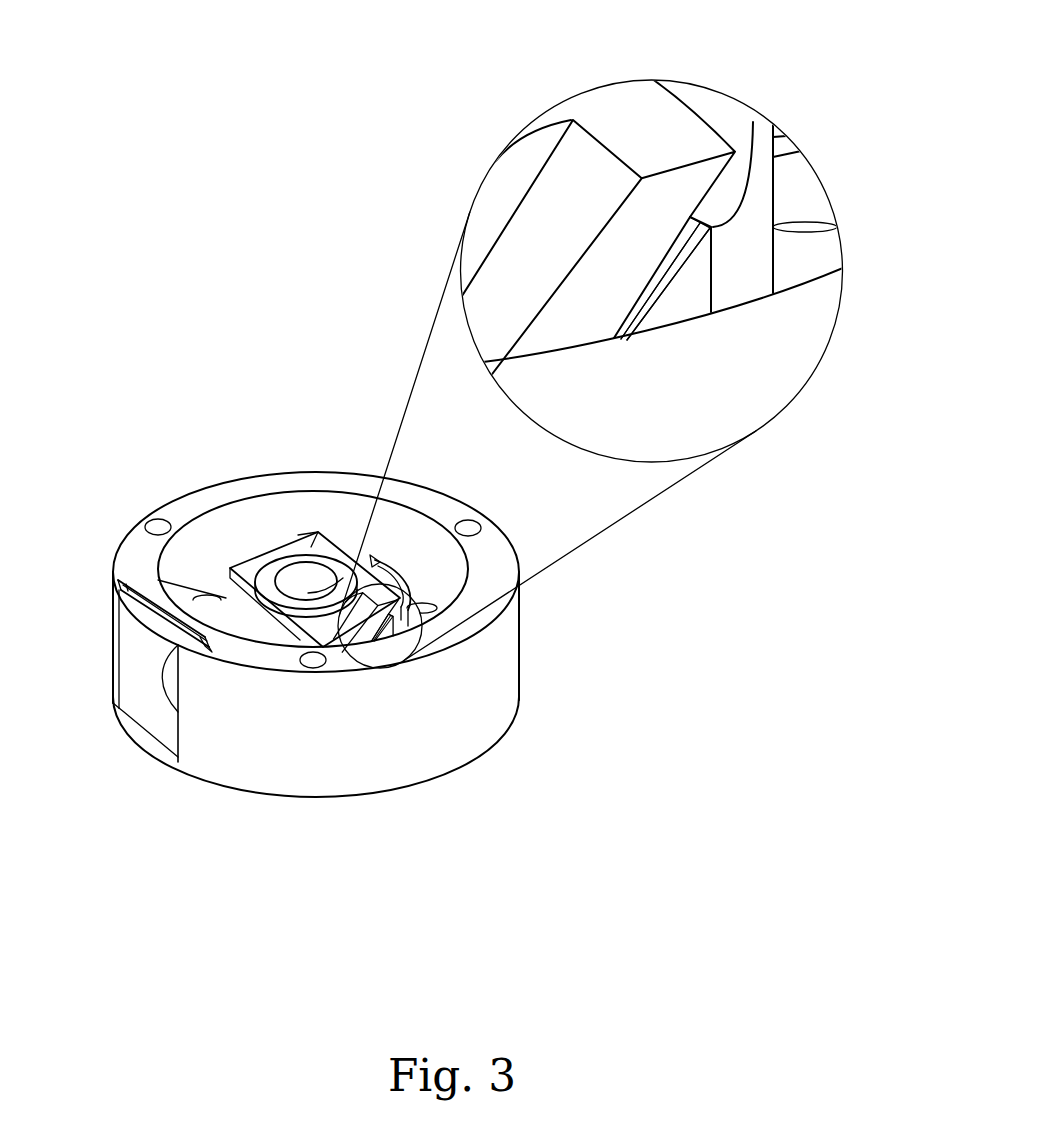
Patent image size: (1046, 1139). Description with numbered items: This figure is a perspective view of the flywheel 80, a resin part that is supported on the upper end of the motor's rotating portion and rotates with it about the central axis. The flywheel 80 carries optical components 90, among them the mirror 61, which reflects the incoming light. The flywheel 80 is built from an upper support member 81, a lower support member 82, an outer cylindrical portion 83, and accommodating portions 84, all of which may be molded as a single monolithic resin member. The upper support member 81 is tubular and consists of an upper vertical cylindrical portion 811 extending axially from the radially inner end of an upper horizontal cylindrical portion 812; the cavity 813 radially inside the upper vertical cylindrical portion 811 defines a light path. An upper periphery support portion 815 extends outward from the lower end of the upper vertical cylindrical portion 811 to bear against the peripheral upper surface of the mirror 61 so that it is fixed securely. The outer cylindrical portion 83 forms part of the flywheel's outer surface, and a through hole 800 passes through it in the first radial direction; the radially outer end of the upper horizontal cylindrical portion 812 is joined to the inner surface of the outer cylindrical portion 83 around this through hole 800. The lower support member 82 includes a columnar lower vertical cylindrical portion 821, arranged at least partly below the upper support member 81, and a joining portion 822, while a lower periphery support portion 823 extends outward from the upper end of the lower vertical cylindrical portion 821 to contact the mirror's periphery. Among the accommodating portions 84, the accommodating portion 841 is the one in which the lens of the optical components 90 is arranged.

The flywheel 80 is at (546, 692).
The through hole 800 is at (138, 673).
The upper support member 81 is at (237, 395).
The upper vertical cylindrical portion 811 is at (280, 565).
The upper horizontal cylindrical portion 812 is at (233, 622).
The cavity 813 is at (322, 578).
The upper periphery support portion 815 is at (700, 138).
The lower support member 82 is at (397, 323).
The lower vertical cylindrical portion 821 is at (368, 572).
The joining portion 822 is at (438, 595).
The lower periphery support portion 823 is at (670, 287).
The outer cylindrical portion 83 is at (130, 560).
The accommodating portions 84 is at (380, 627).
The accommodating portion 841 is at (383, 637).
The mirror 61 is at (618, 323).
The optical components 90 is at (665, 281).